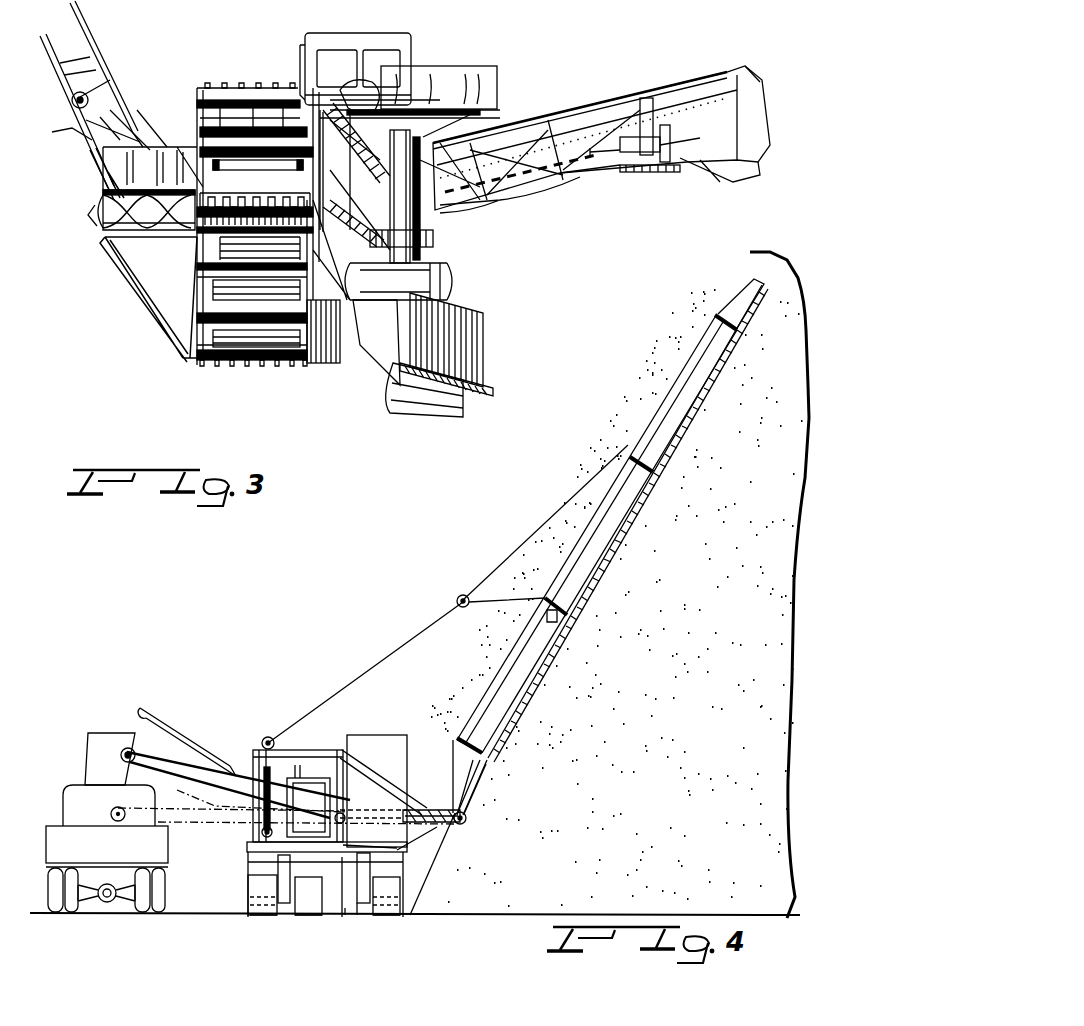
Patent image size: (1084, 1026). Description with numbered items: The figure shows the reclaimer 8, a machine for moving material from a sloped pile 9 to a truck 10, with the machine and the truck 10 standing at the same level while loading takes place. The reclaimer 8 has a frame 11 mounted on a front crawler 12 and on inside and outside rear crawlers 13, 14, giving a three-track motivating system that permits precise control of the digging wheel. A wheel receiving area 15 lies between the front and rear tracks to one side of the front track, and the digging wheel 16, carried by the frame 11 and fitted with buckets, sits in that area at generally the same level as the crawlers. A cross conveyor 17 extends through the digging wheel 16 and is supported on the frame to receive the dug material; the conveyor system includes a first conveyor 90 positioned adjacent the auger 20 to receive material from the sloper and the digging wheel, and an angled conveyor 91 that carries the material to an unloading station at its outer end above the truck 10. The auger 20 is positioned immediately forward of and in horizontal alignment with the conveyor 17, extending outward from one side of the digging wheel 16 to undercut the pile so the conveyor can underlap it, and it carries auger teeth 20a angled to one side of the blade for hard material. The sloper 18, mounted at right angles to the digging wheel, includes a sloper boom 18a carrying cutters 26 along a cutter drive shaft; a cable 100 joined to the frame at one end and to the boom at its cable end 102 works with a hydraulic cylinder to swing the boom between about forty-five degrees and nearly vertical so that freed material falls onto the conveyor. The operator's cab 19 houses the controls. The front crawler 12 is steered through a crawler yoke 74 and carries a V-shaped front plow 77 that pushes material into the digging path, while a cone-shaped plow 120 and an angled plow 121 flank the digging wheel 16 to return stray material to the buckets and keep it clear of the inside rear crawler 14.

In FIG. 3, the reclaimer 8 is at (294, 36).
In FIG. 4, the reclaimer 8 is at (243, 872).
In FIG. 4, the sloped pile 9 is at (712, 778).
In FIG. 4, the truck 10 is at (160, 855).
In FIG. 4, the frame 11 is at (393, 847).
In FIG. 3, the front crawler 12 is at (432, 425).
In FIG. 4, the front crawler 12 is at (308, 925).
In FIG. 4, the outside rear crawler 13 is at (265, 925).
In FIG. 4, the inside rear crawler 14 is at (390, 913).
In FIG. 3, the wheel receiving area 15 is at (293, 367).
In FIG. 4, the wheel receiving area 15 is at (342, 908).
In FIG. 3, the digging wheel 16 is at (246, 375).
In FIG. 4, the digging wheel 16 is at (369, 925).
In FIG. 3, the cross conveyor 17 is at (604, 178).
In FIG. 4, the cross conveyor 17 is at (206, 724).
In FIG. 3, the sloper 18 is at (80, 140).
In FIG. 4, the sloper 18 is at (562, 655).
In FIG. 4, the sloper boom 18a is at (650, 440).
In FIG. 3, the operator's cab 19 is at (402, 45).
In FIG. 3, the auger 20 is at (96, 224).
In FIG. 4, the auger 20 is at (429, 800).
In FIG. 3, the auger teeth 20a is at (187, 180).
In FIG. 3, the cutters 26 is at (96, 170).
In FIG. 4, the cutters 26 is at (587, 583).
In FIG. 3, the crawler yoke 74 is at (423, 280).
In FIG. 3, the V-shaped front plow 77 is at (471, 349).
In FIG. 4, the first conveyor 90 is at (360, 813).
In FIG. 4, the angled conveyor 91 is at (230, 772).
In FIG. 4, the cable 100 is at (373, 663).
In FIG. 4, the cable end 102 is at (460, 597).
In FIG. 3, the cone-shaped plow 120 is at (160, 282).
In FIG. 3, the plow 121 is at (330, 343).